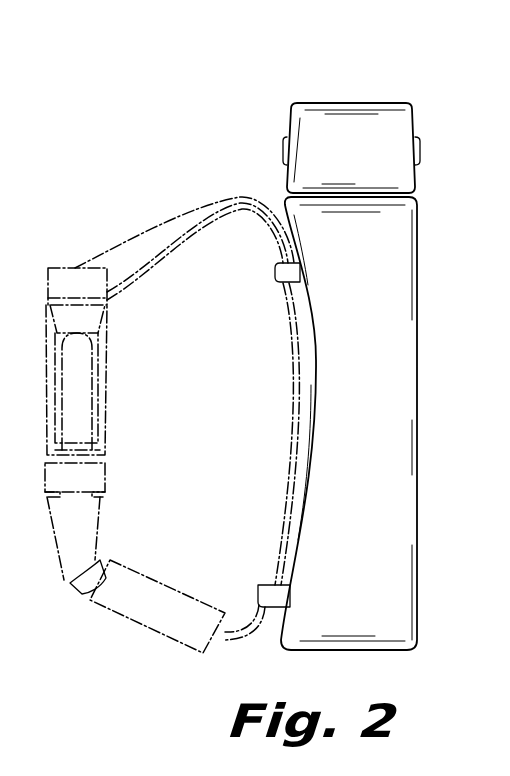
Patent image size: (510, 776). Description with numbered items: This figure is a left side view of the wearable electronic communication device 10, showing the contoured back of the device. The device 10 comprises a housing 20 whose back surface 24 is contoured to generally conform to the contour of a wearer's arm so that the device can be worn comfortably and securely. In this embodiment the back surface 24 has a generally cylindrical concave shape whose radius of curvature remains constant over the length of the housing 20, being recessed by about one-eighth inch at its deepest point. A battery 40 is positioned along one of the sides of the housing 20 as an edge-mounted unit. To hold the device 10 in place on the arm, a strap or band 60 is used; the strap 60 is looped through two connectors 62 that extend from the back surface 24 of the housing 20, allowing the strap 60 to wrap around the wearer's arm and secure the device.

The wearable electronic communication device 10 is at (272, 70).
The housing 20 is at (385, 578).
The back surface 24 is at (298, 490).
The battery 40 is at (338, 102).
The strap 60 is at (223, 196).
The connectors 62 is at (275, 272).